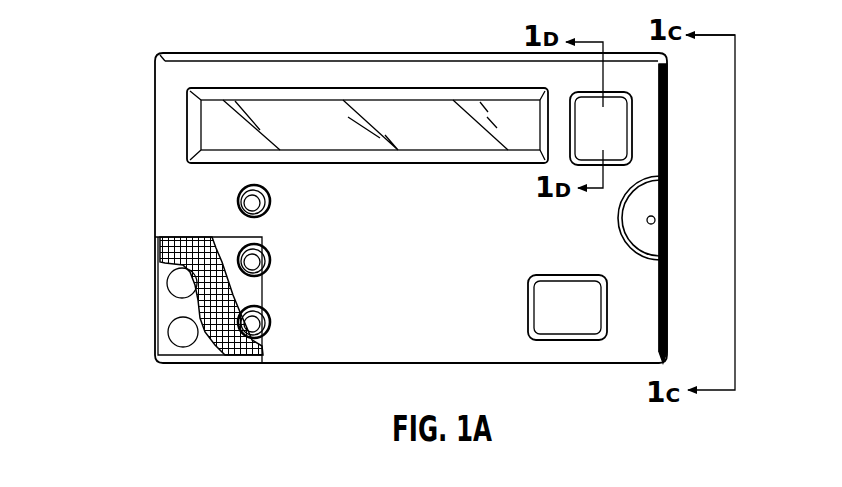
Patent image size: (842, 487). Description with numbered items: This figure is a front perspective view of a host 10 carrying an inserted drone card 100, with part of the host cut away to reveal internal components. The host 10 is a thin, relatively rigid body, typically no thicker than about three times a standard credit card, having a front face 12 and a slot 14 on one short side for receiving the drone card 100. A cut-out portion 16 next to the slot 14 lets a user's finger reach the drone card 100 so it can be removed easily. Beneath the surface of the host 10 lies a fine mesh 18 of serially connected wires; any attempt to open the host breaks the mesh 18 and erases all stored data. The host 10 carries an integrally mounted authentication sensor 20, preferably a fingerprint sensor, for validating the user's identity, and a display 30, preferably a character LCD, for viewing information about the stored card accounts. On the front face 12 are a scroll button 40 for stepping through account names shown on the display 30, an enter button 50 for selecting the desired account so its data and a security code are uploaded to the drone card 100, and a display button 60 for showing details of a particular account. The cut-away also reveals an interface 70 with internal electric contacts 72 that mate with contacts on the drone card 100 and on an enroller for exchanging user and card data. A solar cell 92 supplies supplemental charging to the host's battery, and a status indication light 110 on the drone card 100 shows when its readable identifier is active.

The host 10 is at (106, 77).
The front face 12 is at (430, 256).
The slot 14 is at (668, 70).
The cut-out portion 16 is at (655, 180).
The fine mesh 18 is at (218, 338).
The authentication sensor 20 is at (570, 310).
The display 30 is at (320, 118).
The scroll button 40 is at (266, 200).
The enter button 50 is at (266, 260).
The display button 60 is at (266, 322).
The interface 70 is at (198, 348).
The internal electric contacts 72 is at (186, 283).
The solar cell 92 is at (620, 125).
The drone card 100 is at (635, 232).
The status indication light 110 is at (656, 222).